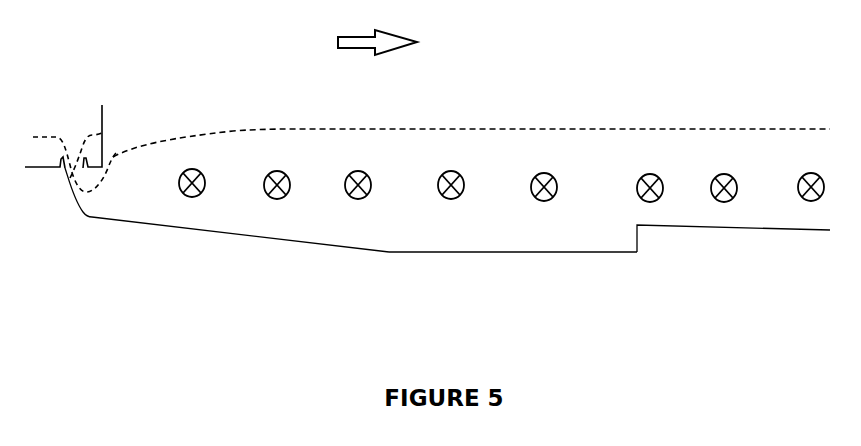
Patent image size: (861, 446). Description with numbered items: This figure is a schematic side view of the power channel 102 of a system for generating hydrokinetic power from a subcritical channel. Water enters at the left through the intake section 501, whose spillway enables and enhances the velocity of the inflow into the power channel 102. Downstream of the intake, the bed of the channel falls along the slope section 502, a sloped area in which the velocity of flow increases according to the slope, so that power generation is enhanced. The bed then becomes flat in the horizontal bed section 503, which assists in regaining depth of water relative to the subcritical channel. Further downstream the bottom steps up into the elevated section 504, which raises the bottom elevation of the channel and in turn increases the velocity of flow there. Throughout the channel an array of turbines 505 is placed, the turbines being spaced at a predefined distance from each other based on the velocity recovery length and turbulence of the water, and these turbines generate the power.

The intake section 501 is at (102, 95).
The power channel 102 is at (471, 122).
The slope section 502 is at (384, 273).
The horizontal bed section 503 is at (634, 273).
The elevated section 504 is at (639, 262).
The array of turbines 505 is at (501, 202).